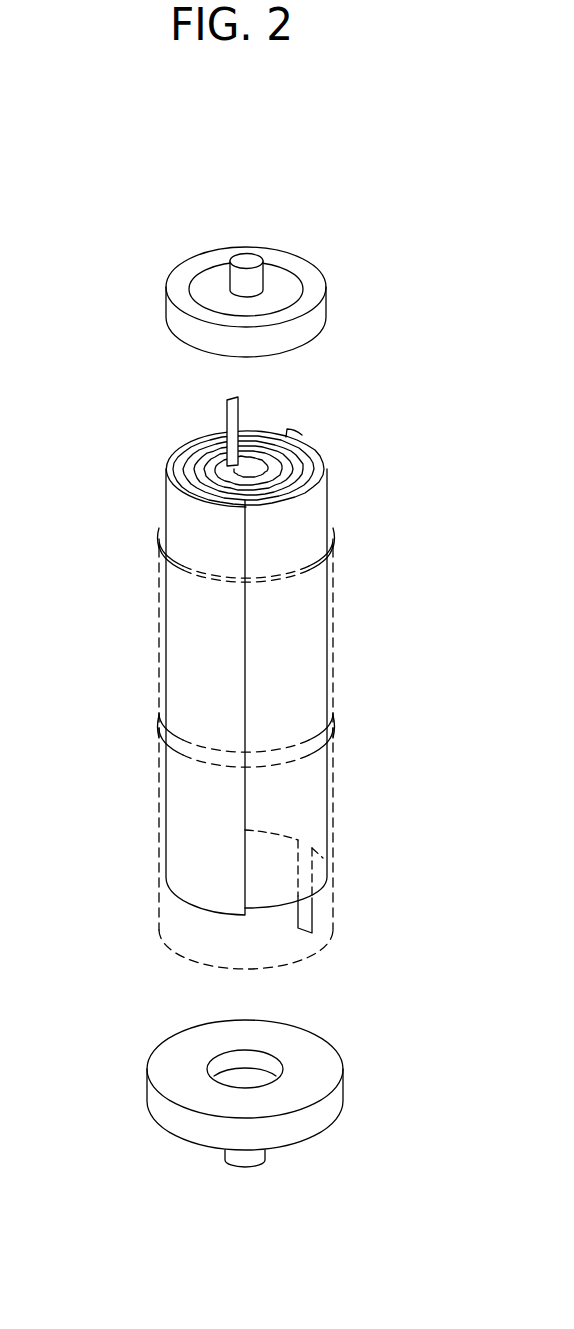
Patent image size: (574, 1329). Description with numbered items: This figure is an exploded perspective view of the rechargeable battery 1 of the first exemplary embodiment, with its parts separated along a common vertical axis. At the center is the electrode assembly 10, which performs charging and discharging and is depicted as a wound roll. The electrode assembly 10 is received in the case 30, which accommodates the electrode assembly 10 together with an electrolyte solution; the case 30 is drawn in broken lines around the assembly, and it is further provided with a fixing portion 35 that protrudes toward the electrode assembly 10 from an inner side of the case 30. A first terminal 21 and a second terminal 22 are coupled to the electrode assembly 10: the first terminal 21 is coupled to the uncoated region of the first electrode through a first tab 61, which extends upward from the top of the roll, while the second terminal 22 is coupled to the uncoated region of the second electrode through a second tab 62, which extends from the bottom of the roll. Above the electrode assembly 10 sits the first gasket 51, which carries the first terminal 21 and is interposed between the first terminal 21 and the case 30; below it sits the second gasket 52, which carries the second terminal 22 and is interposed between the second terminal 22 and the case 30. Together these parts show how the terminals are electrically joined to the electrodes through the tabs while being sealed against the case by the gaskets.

The rechargeable battery 1 is at (116, 212).
The electrode assembly 10 is at (303, 437).
The first terminal 21 is at (255, 277).
The second terminal 22 is at (250, 1157).
The case 30 is at (172, 903).
The fixing portion 35 is at (297, 752).
The first gasket 51 is at (310, 288).
The second gasket 52 is at (318, 1057).
The first tab 61 is at (230, 418).
The second tab 62 is at (307, 915).